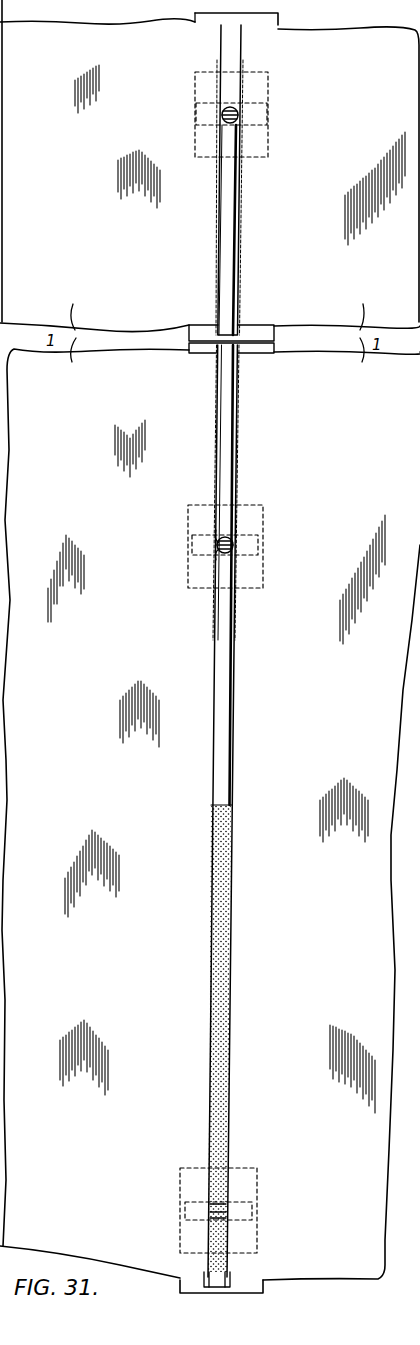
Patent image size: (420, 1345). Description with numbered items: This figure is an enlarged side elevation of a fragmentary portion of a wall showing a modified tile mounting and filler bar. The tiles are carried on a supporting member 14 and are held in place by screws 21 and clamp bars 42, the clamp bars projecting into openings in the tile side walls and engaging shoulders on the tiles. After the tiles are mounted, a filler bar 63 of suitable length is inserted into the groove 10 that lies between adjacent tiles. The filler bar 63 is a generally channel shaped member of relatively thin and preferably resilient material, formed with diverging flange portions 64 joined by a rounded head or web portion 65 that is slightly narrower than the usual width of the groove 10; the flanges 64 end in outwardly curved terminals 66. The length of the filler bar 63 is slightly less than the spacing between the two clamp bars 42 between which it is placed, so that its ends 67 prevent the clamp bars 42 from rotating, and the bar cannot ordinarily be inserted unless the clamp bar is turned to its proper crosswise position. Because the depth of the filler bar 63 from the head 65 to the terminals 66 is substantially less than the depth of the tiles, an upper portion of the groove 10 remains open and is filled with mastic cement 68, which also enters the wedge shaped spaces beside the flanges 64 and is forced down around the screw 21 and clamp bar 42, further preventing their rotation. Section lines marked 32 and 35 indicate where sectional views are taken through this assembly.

The groove 10 is at (232, 50).
The supporting member 14 is at (200, 20).
The screw 21 is at (222, 112).
The section line 32- 32 is at (232, 43).
The section line 35- 35 is at (196, 932).
The clamp bar 42 is at (268, 100).
The filler bar 63 is at (230, 419).
The diverging flange portion 64 is at (208, 325).
The head portion 65 is at (228, 238).
The outwardly curved terminal 66 is at (210, 353).
The end of filler bar 67 is at (217, 535).
The mastic cement 68 is at (218, 1035).